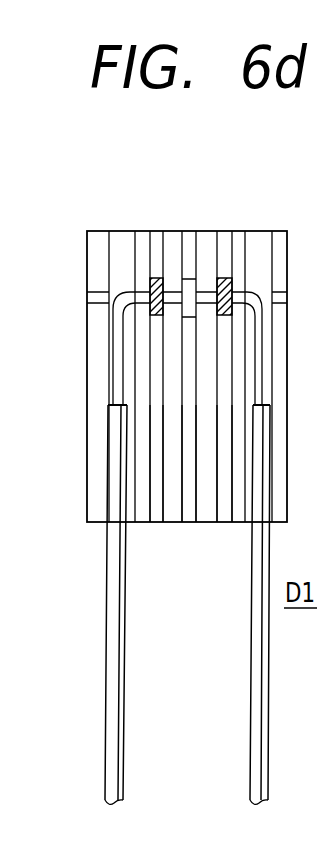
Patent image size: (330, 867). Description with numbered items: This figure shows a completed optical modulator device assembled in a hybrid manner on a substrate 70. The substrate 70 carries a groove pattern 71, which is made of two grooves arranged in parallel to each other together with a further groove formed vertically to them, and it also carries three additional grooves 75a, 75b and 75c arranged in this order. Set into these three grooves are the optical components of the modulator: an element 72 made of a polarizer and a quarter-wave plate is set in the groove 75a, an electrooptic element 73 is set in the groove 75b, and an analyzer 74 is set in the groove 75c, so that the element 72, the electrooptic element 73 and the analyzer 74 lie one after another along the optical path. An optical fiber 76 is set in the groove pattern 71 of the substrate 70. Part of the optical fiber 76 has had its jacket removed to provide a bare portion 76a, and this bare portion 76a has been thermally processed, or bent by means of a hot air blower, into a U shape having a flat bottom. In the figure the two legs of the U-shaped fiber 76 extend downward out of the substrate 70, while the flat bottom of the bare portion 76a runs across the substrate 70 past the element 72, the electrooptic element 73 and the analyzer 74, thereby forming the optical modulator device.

The substrate 70 is at (87, 497).
The groove pattern 71 is at (108, 318).
The element made of polarizer plus quarter-wave plate 72 is at (160, 278).
The electrooptic element 73 is at (193, 279).
The analyzer 74 is at (220, 278).
The groove 75a is at (152, 523).
The groove 75b is at (188, 523).
The groove 75c is at (220, 523).
The optical fiber 76 is at (107, 637).
The bare portion 76a is at (113, 373).